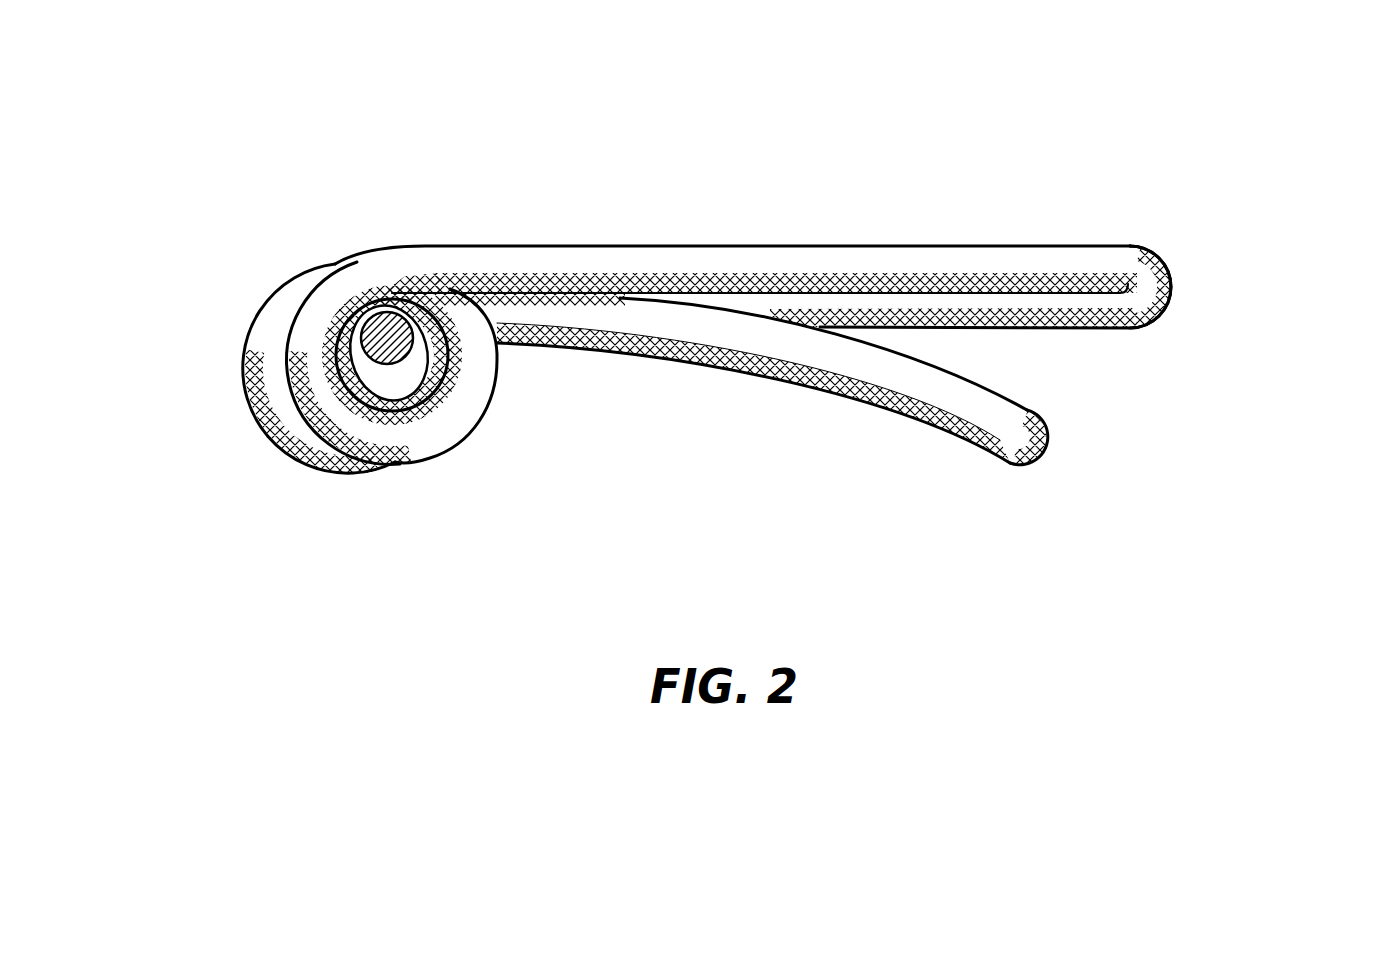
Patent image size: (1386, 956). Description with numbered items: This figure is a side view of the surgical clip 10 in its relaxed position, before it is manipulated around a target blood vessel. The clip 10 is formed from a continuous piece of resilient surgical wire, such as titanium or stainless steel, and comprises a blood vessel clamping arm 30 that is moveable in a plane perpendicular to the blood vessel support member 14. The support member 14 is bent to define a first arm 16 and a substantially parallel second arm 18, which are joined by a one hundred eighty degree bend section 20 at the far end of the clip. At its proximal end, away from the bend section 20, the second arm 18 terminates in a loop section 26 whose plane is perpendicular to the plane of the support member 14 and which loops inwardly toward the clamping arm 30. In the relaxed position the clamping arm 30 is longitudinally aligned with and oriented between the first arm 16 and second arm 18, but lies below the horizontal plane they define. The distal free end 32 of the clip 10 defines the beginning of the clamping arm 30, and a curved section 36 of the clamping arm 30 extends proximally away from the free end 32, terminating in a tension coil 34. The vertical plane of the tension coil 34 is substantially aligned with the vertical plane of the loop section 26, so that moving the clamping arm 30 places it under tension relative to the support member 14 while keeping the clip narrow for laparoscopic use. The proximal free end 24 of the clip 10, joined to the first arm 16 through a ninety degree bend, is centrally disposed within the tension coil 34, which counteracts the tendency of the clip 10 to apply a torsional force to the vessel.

The surgical clip 10 is at (725, 338).
The blood vessel support member 14 is at (1117, 246).
The second arm 18 is at (840, 262).
The first arm 16 is at (1090, 328).
The one hundred eighty degree bend section 20 is at (1142, 280).
The tension coil 34 is at (268, 347).
The loop section 26 is at (295, 400).
The proximal free end 24 is at (382, 350).
The blood vessel clamping arm 30 is at (608, 347).
The curved section 36 is at (752, 360).
The distal free end 32 is at (1033, 457).